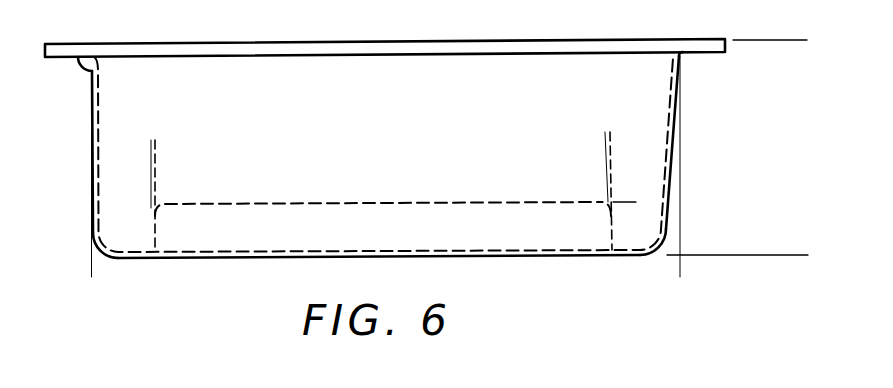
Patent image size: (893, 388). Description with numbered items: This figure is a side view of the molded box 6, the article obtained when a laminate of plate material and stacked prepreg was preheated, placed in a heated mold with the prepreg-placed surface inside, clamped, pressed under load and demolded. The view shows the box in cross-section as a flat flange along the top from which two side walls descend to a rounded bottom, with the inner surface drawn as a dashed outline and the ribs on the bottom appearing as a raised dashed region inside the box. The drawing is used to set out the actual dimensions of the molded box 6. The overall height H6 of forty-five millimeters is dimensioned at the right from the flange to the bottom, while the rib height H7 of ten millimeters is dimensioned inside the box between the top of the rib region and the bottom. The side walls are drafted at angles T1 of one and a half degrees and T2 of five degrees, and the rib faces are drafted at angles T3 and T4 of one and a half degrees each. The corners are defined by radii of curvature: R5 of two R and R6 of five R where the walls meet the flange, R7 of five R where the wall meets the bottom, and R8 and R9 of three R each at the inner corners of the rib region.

The molded box 6 is at (608, 83).
The radius of curvature R5 is at (684, 56).
The radius of curvature R6 is at (82, 67).
The radius of curvature R7 is at (114, 246).
The radius of curvature R8 is at (160, 208).
The radius of curvature R9 is at (599, 209).
The angle T1 is at (96, 224).
The angle T2 is at (669, 219).
The angle T3 is at (152, 150).
The angle T4 is at (606, 136).
The height H6 is at (790, 43).
The height H7 is at (623, 205).